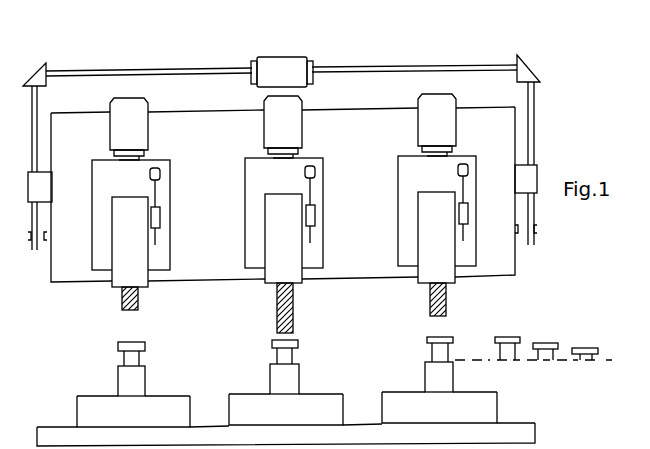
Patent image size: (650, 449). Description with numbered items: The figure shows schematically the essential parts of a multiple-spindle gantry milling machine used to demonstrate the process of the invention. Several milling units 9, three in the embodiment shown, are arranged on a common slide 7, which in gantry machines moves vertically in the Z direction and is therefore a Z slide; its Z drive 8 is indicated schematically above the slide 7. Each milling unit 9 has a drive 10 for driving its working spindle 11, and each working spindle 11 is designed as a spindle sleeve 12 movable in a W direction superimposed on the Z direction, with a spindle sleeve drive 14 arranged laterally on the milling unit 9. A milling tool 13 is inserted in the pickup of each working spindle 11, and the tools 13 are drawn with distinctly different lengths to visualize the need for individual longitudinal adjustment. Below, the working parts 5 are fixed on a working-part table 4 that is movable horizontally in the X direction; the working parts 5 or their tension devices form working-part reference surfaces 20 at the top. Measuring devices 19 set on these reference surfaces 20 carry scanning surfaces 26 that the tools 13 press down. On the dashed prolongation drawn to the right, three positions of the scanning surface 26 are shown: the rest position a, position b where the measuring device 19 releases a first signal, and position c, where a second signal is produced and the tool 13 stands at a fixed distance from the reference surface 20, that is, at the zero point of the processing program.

The base plate 4 is at (530, 433).
The working part 5 is at (87, 408).
The slide 7 is at (377, 130).
The Z drive 8 is at (281, 70).
The milling unit 9 is at (108, 182).
The drive 10 is at (443, 123).
The working spindle 11 is at (445, 284).
The spindle sleeve 12 is at (430, 272).
The milling tool 13 is at (430, 310).
The spindle sleeve drive 14 is at (464, 195).
The measuring device 19 is at (130, 383).
The working-part reference surface 20 is at (160, 396).
The scanning surface 26 is at (135, 345).